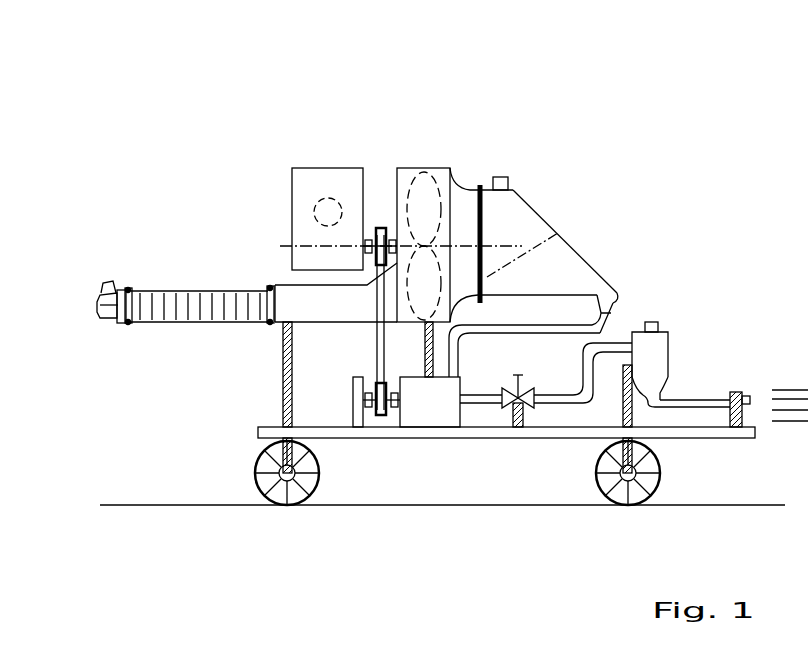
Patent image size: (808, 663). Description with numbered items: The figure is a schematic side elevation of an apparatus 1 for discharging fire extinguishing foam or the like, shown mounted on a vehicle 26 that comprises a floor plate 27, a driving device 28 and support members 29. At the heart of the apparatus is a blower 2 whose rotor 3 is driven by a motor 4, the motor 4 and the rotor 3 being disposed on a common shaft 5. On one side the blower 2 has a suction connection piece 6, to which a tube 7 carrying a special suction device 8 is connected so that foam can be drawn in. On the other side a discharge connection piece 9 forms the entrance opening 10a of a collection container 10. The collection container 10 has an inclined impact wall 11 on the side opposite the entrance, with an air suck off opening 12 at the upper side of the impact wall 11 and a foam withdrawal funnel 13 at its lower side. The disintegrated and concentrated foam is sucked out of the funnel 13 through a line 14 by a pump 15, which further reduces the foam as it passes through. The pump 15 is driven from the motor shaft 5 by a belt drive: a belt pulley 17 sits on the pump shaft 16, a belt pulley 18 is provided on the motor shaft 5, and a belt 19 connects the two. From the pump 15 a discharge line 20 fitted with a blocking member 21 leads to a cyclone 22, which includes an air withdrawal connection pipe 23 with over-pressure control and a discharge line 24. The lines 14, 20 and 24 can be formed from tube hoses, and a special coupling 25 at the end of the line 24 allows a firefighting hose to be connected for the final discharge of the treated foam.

The apparatus 1 is at (528, 58).
The blower 2 is at (406, 168).
The rotor 3 is at (433, 178).
The motor 4 is at (300, 192).
The shaft 5 is at (285, 247).
The suction connection piece 6 is at (287, 324).
The tube 7 is at (235, 303).
The special suction device 8 is at (108, 318).
The discharge connection piece 9 is at (463, 195).
The collection container 10 is at (527, 213).
The entrance opening 10a is at (588, 265).
The inclined impact wall 11 is at (617, 295).
The air suck off opening 12 is at (506, 178).
The foam withdrawal funnel 13 is at (614, 305).
The line 14 is at (548, 327).
The pump 15 is at (433, 420).
The pump shaft 16 is at (396, 405).
The belt pulley 17 is at (378, 413).
The belt pulley 18 is at (380, 228).
The belt 19 is at (377, 360).
The discharge line 20 is at (570, 400).
The blocking member 21 is at (517, 405).
The cyclone 22 is at (662, 352).
The air withdrawal connection pipe 23 is at (657, 327).
The discharge line 24 is at (688, 402).
The special coupling 25 is at (745, 396).
The vehicle 26 is at (214, 478).
The floor plate 27 is at (708, 438).
The driving device 28 is at (277, 507).
The support members 29 is at (283, 385).